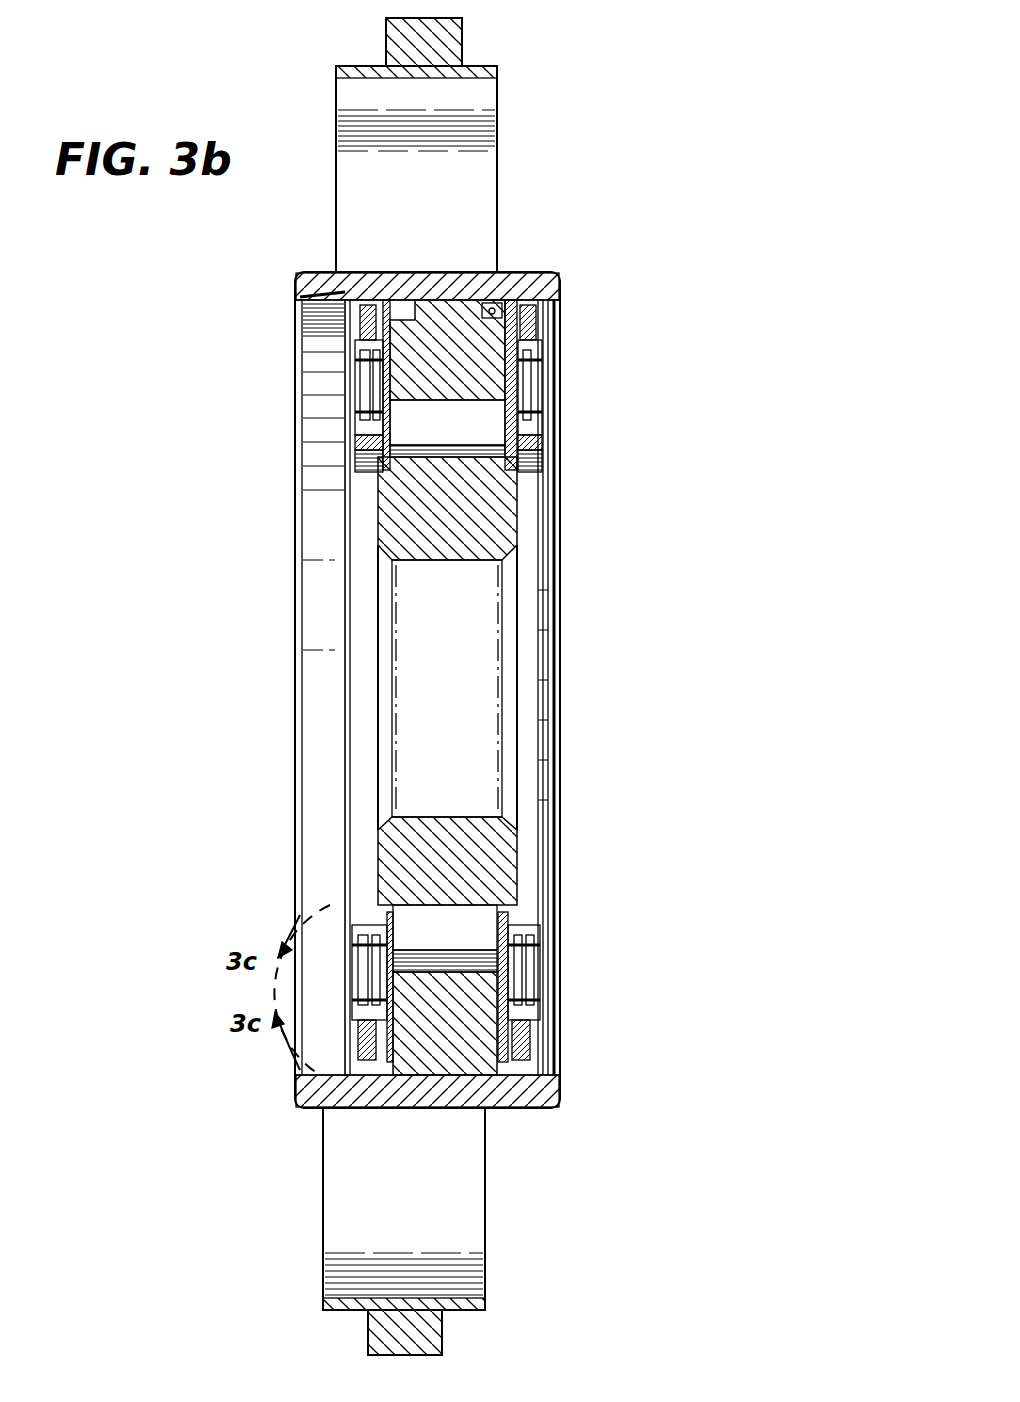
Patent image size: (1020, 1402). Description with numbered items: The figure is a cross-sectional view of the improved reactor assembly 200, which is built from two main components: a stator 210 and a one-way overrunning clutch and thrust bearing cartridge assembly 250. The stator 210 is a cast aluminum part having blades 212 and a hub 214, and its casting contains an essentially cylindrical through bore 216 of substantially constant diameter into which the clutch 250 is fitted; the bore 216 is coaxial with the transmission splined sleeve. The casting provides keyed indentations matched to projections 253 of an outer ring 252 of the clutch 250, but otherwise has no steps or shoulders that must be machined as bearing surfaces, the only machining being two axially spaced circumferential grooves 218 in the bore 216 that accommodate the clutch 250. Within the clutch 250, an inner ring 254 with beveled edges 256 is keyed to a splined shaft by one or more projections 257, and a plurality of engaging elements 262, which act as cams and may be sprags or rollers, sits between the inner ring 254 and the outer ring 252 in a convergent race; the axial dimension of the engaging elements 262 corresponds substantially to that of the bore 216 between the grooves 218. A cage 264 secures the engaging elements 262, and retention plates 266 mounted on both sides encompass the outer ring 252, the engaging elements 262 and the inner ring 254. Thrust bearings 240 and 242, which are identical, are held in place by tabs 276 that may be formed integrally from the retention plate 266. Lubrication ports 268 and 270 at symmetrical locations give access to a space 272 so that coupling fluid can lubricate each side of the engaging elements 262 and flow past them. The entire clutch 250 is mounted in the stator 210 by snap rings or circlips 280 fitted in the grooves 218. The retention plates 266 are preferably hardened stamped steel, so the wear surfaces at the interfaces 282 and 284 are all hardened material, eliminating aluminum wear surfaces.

The reactor assembly 200 is at (623, 306).
The stator 210 is at (228, 1103).
The blades 212 is at (497, 123).
The hub 214 is at (312, 292).
The through bore 216 is at (508, 300).
The circumferential grooves 218 is at (553, 1060).
The thrust bearing 240 is at (352, 378).
The thrust bearing 242 is at (540, 372).
The overrunning clutch and thrust bearing cartridge assembly 250 is at (600, 692).
The outer ring 252 is at (428, 300).
The projections 253 is at (460, 300).
The inner ring 254 is at (553, 552).
The beveled edges 256 is at (445, 438).
The projections 257 is at (500, 820).
The engaging elements 262 is at (470, 394).
The cage 264 is at (541, 444).
The retention plates 266 is at (386, 300).
The lubrication ports 268 is at (396, 906).
The lubrication ports 270 is at (435, 1098).
The space 272 is at (390, 1018).
The tabs 276 is at (408, 950).
The snap rings or circlips 280 is at (368, 300).
The interface 282 is at (386, 466).
The interface 284 is at (360, 440).